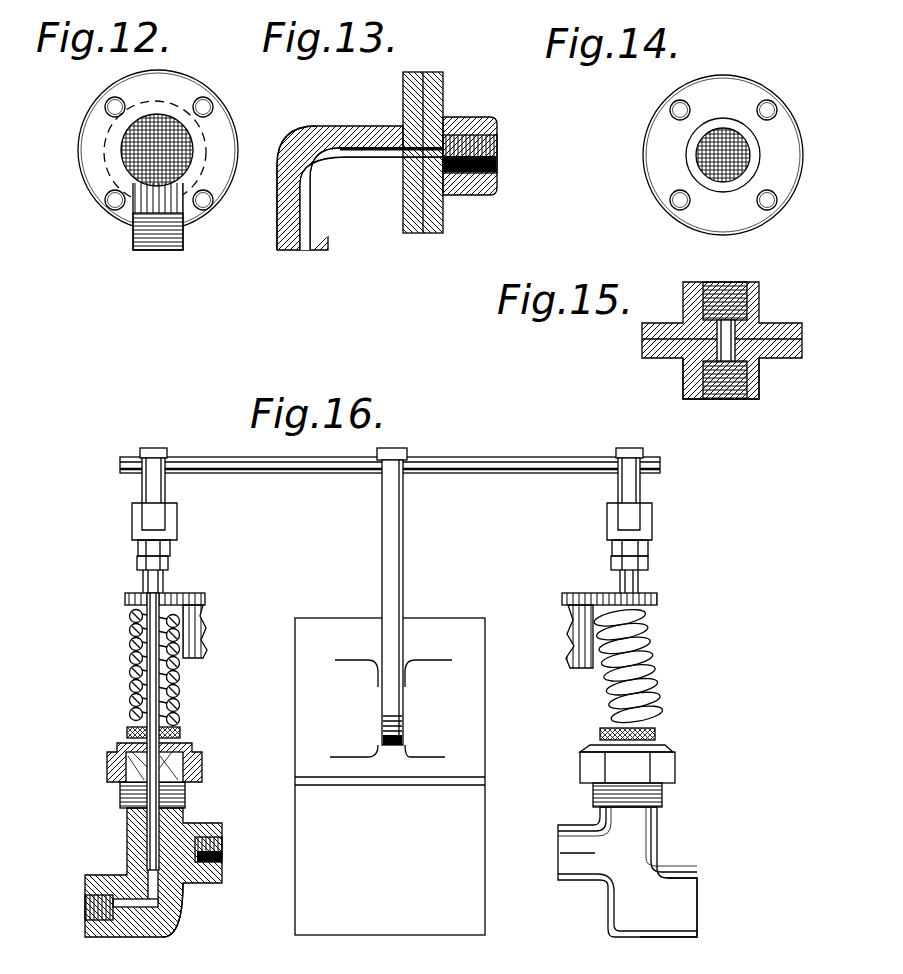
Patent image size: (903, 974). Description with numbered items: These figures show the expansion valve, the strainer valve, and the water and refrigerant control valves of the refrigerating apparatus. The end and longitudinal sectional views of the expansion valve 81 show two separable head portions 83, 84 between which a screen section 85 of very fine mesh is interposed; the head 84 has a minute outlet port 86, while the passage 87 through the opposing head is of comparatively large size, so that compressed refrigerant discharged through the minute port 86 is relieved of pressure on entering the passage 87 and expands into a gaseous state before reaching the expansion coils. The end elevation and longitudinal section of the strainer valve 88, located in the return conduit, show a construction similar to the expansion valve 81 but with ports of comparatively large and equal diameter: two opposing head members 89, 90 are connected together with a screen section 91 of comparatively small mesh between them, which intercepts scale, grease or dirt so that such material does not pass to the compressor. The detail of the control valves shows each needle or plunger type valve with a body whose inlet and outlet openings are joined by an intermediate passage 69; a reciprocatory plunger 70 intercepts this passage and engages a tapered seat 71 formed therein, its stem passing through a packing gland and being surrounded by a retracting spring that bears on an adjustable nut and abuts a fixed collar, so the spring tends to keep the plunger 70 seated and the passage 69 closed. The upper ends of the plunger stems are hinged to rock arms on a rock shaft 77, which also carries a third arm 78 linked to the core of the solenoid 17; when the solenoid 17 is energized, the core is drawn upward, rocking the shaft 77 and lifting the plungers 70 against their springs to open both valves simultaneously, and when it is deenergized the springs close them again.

In FIG. 16, the electromagnet or solenoid 17 is at (390, 776).
In FIG. 16, the intermediate passage 69 is at (180, 903).
In FIG. 16, the reciprocatory plunger 70 is at (162, 814).
In FIG. 16, the tapered seat 71 is at (122, 830).
In FIG. 16, the rock shaft 77 is at (533, 452).
In FIG. 16, the third arm 78 is at (404, 556).
In FIG. 13, the expansion valve 81 is at (340, 166).
In FIG. 13, the separable head portion 83 is at (400, 193).
In FIG. 13, the head 84 is at (443, 100).
In FIG. 12, the screen section 85 is at (121, 150).
In FIG. 13, the screen section 85 is at (400, 194).
In FIG. 13, the minute outlet port 86 is at (462, 117).
In FIG. 12, the passage 87 is at (95, 163).
In FIG. 13, the passage 87 is at (330, 128).
In FIG. 15, the strainer valve 88 is at (642, 339).
In FIG. 14, the head member 89 is at (787, 163).
In FIG. 15, the head member 89 is at (762, 298).
In FIG. 15, the head member 90 is at (780, 360).
In FIG. 14, the screen section 91 is at (750, 143).
In FIG. 15, the screen section 91 is at (745, 326).